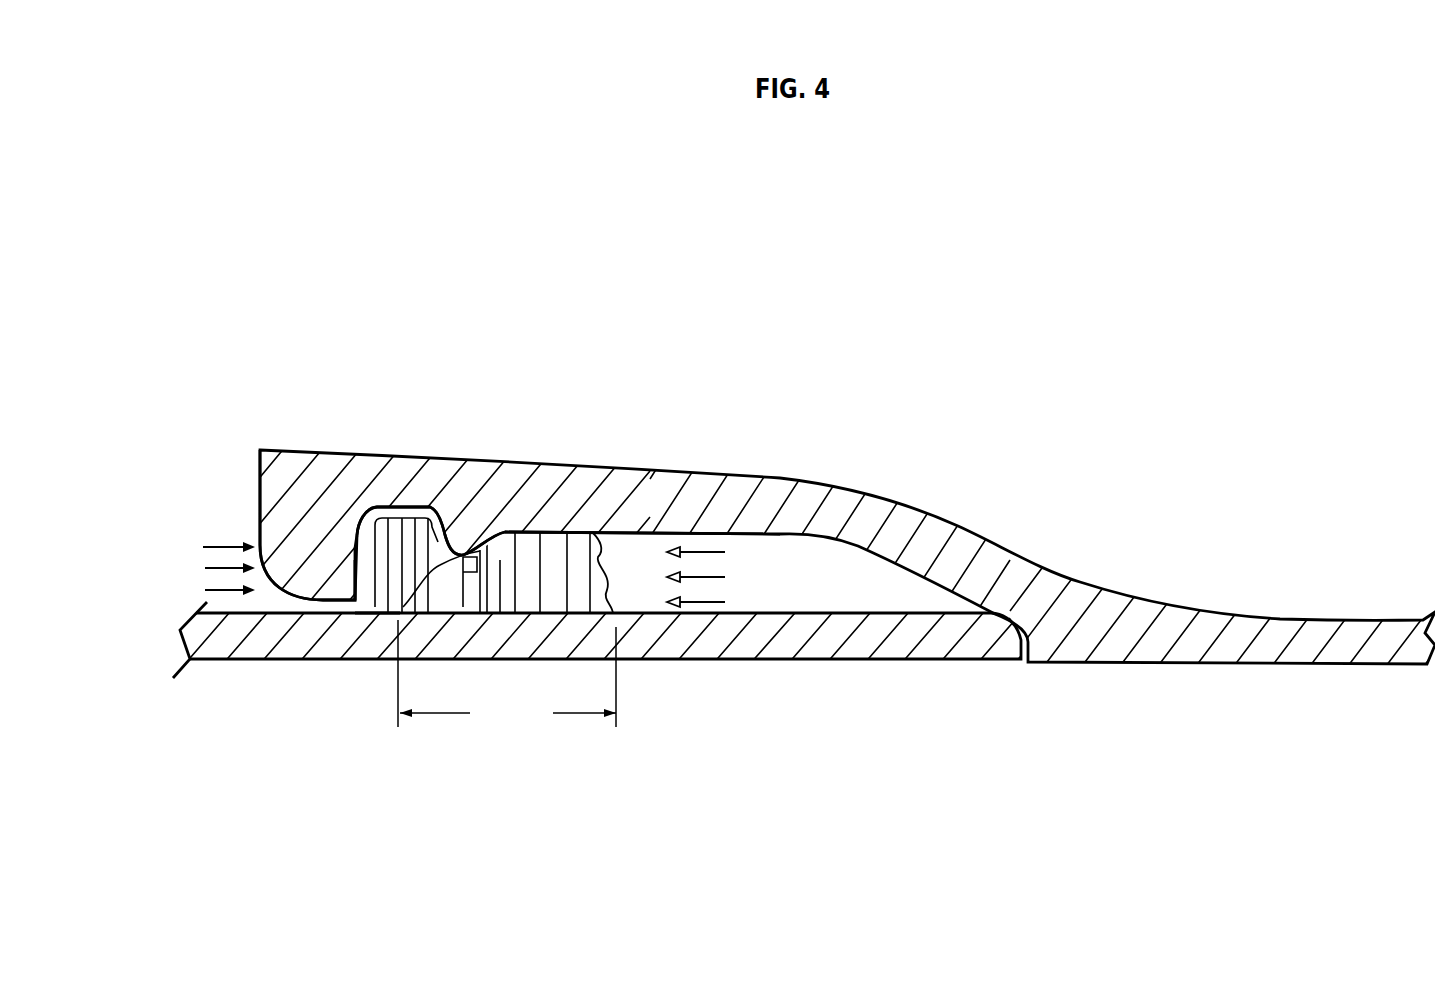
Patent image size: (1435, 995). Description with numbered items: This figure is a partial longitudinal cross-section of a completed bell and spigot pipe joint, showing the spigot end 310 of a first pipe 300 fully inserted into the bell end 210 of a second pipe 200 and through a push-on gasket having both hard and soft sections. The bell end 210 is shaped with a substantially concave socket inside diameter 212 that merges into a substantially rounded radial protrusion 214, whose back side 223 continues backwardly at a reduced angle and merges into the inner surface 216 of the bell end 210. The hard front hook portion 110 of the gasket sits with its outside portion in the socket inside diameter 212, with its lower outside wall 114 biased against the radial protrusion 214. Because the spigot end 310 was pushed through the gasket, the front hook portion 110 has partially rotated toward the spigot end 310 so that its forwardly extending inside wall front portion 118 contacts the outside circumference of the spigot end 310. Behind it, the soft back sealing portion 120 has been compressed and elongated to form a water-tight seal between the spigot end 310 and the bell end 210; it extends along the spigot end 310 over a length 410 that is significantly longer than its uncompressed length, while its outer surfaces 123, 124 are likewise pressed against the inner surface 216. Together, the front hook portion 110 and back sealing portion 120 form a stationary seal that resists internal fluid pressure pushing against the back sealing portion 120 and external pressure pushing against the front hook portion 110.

The first pipe 300 is at (196, 373).
The second pipe 200 is at (902, 470).
The bell end 210 is at (257, 445).
The forwardly extending inside wall front portion 118 is at (383, 607).
The substantially, concavely-shaped socket inside diameter 212 is at (402, 507).
The substantially rounded radial protrusion 214 is at (458, 548).
The inner surface 216 is at (612, 534).
The back side 223 is at (497, 537).
The back sealing portion 120 is at (620, 531).
The outer surface 123 is at (487, 537).
The outer surface 124 is at (577, 533).
The lower outside wall 114 is at (458, 548).
The spigot end 310 is at (253, 659).
The front hook portion 110 is at (377, 613).
The length 410 is at (507, 676).